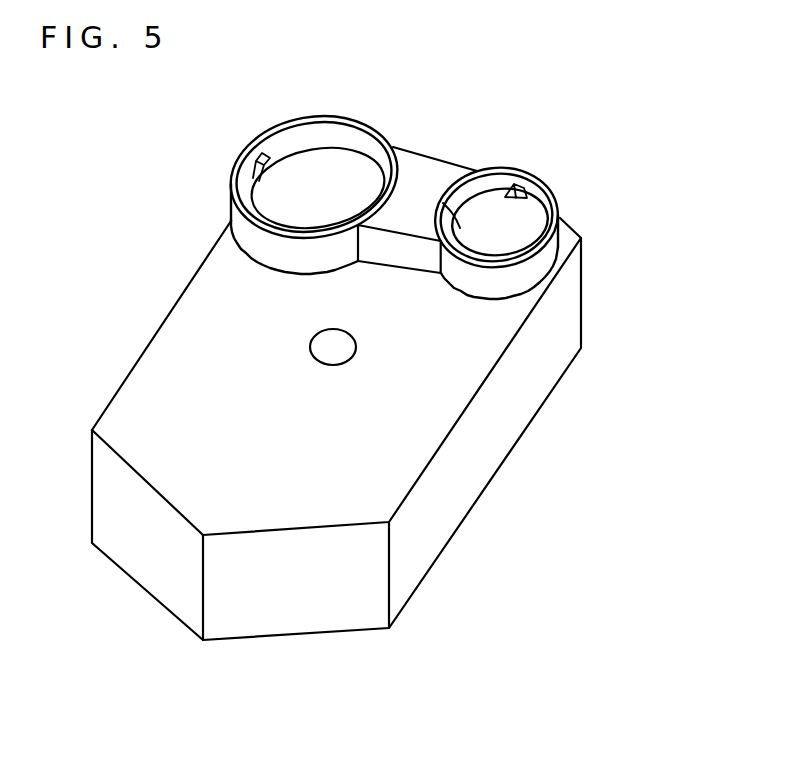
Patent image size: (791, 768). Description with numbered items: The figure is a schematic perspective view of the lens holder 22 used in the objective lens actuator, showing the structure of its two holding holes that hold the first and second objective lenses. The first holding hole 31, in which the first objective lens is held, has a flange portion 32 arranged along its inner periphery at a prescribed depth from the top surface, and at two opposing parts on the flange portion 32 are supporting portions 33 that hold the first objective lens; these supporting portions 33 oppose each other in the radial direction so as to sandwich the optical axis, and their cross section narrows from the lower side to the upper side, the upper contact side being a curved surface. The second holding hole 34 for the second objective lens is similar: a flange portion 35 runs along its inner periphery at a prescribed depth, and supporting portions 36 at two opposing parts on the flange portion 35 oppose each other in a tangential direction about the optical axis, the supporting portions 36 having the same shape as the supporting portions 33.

The lens holder 22 is at (523, 403).
The first holding hole 31 is at (357, 140).
The flange portion 32 is at (328, 146).
The supporting portion 33 is at (252, 146).
The second holding hole 34 is at (437, 213).
The flange portion 35 is at (480, 185).
The supporting portion 36 is at (527, 175).